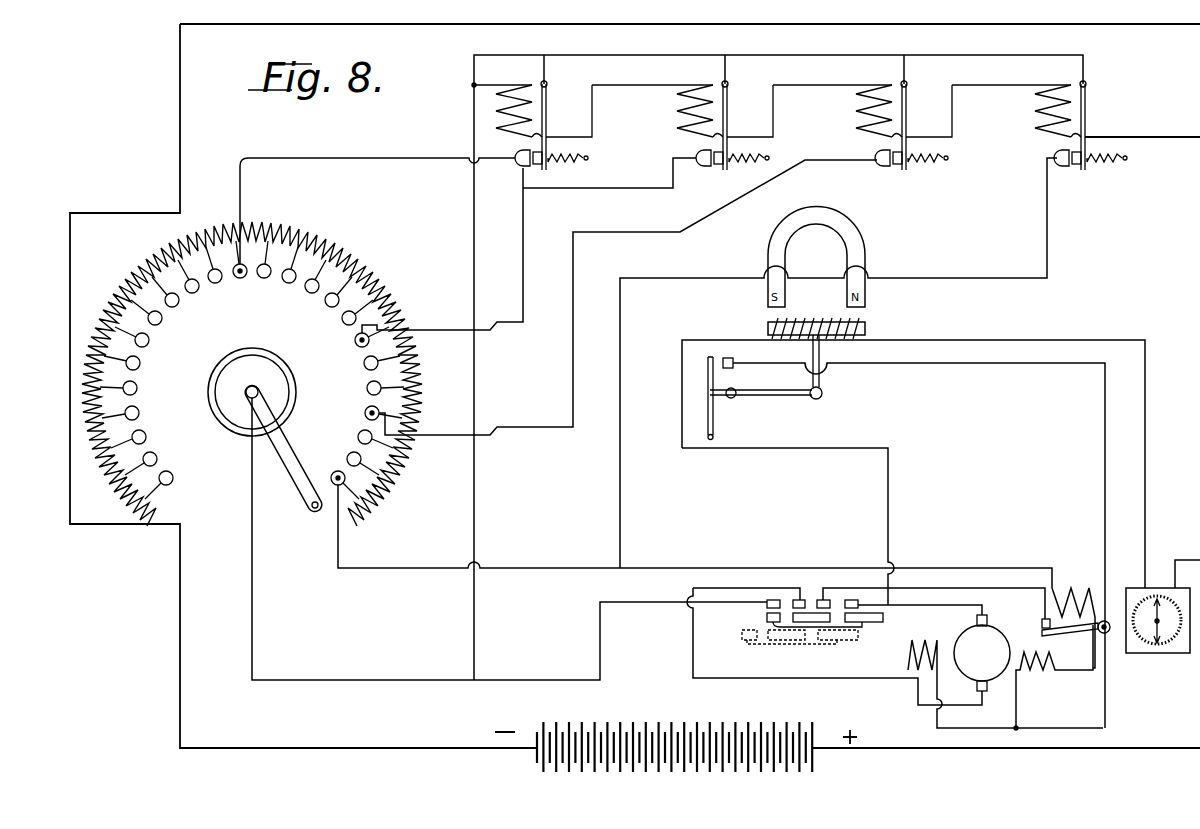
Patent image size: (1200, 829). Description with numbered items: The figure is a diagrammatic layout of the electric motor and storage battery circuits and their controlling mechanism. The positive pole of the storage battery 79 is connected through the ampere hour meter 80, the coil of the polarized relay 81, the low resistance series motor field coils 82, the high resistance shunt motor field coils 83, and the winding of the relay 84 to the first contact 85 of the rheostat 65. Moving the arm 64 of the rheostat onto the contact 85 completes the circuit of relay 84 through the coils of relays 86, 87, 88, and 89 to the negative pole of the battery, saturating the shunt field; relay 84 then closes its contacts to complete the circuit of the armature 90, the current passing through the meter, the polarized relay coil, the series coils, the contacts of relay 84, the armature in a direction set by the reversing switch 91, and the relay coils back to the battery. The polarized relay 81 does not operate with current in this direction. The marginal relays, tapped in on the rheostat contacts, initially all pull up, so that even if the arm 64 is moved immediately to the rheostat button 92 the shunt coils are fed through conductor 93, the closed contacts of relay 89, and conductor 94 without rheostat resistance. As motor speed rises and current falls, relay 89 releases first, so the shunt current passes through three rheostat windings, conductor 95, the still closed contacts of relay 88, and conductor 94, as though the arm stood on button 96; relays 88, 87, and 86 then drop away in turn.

The arm 64 is at (293, 453).
The rheostat 65 is at (252, 363).
The storage battery 79 is at (637, 722).
The ampere hour meter 80 is at (1158, 652).
The polarized relay 81 is at (820, 323).
The low resistance series motor field coils 82 is at (908, 670).
The high resistance shunt motor field coils 83 is at (1054, 676).
The relay 84 is at (1067, 586).
The first contact 85 is at (304, 491).
The relay 86 is at (532, 114).
The relay 87 is at (682, 114).
The relay 88 is at (862, 114).
The relay 89 is at (1076, 114).
The armature 90 is at (982, 653).
The reversing switch 91 is at (810, 617).
The rheostat button 92 is at (245, 279).
The conductor 93 is at (623, 553).
The conductor 94 is at (638, 50).
The conductor 95 is at (527, 427).
The button 96 is at (365, 413).